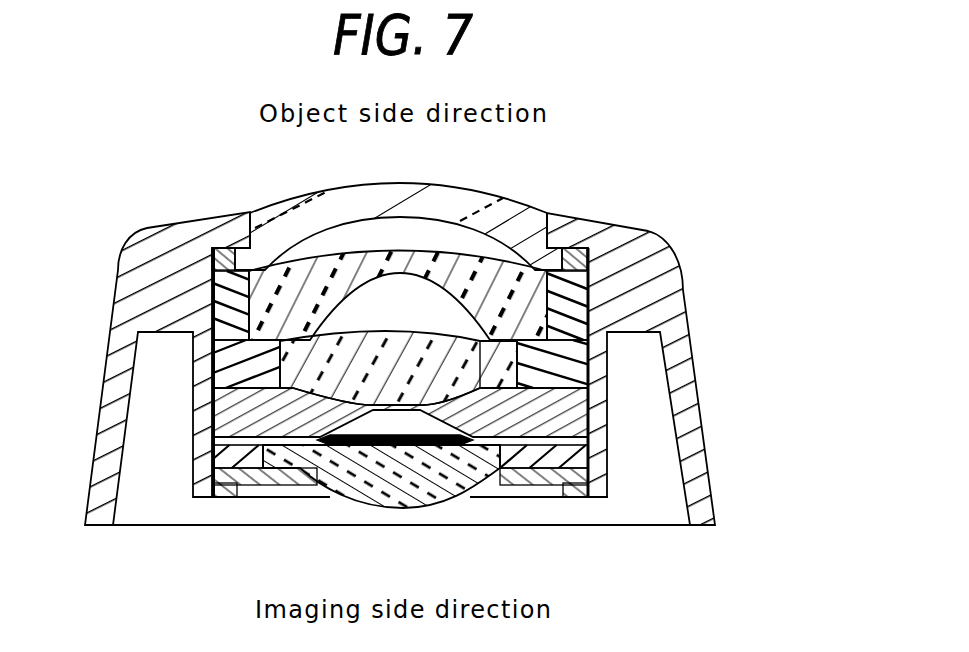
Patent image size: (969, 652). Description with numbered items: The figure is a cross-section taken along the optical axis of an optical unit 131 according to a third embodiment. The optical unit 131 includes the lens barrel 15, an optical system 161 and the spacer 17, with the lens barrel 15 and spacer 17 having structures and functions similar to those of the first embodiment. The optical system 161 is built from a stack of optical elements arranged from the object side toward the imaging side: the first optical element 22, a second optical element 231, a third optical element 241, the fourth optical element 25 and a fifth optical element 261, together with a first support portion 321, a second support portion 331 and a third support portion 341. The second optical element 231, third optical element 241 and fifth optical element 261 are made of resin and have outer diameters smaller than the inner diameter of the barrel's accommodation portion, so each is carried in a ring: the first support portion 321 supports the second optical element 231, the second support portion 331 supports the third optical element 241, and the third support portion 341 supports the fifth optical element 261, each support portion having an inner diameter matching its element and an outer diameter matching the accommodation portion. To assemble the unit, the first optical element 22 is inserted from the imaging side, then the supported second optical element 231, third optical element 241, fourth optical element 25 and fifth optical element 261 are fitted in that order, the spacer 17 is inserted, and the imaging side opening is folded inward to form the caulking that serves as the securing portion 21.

The lens barrel 15 is at (107, 373).
The spacer 17 is at (516, 483).
The securing portion 21 is at (233, 488).
The first optical element 22 is at (527, 213).
The first support portion 321 is at (560, 283).
The second optical element 231 is at (552, 305).
The third optical element 241 is at (540, 352).
The second support portion 331 is at (505, 372).
The fourth optical element 25 is at (520, 390).
The fifth optical element 261 is at (545, 432).
The third support portion 341 is at (493, 476).
The optical system 161 is at (529, 274).
The optical unit 131 is at (165, 604).